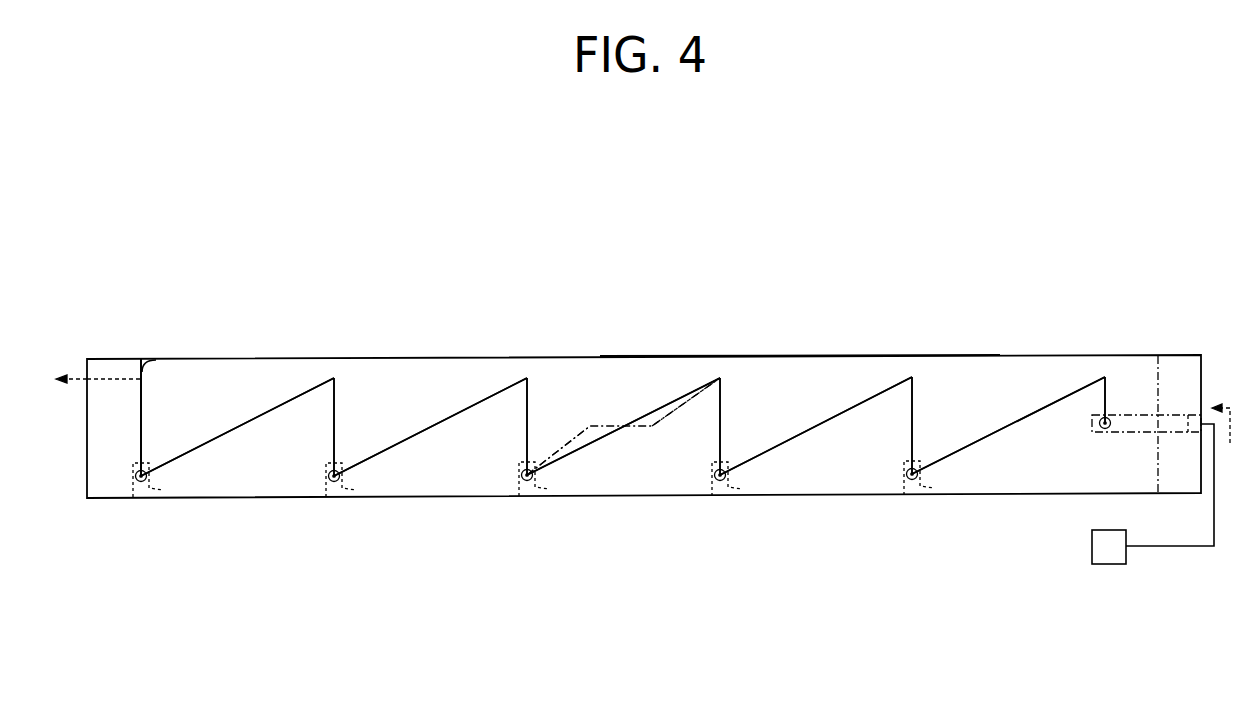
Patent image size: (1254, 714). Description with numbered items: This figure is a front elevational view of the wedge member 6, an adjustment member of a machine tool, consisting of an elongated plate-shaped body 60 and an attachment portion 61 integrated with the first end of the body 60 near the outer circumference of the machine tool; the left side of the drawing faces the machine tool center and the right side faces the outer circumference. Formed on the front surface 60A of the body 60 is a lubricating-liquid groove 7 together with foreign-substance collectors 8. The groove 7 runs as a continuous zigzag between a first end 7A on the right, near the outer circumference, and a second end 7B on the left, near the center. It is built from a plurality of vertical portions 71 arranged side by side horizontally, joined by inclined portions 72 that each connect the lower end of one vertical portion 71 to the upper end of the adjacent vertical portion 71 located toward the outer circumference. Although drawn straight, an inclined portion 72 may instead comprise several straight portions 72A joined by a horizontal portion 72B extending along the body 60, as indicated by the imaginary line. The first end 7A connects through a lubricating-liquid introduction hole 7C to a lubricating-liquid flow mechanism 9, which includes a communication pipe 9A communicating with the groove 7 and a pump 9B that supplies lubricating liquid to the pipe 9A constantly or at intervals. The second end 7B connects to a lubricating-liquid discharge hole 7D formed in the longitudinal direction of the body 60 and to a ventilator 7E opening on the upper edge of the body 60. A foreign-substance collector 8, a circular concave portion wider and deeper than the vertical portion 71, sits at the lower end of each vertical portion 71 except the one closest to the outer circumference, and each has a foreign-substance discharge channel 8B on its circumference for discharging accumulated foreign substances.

The wedge member 6 is at (882, 295).
The body 60 is at (653, 362).
The front surface 60A is at (825, 372).
The attachment portion 61 is at (1158, 378).
The lubricating-liquid groove 7 is at (485, 377).
The first end 7A is at (1108, 418).
The second end 7B is at (144, 380).
The lubricating-liquid introduction hole 7C is at (1133, 433).
The lubricating-liquid discharge hole 7D is at (109, 377).
The ventilator 7E is at (153, 363).
The vertical portions 71 is at (144, 417).
The inclined portions 72 is at (242, 426).
The straight portions 72A is at (582, 434).
The horizontal portion 72B is at (618, 426).
The foreign-substance collector 8 is at (135, 478).
The foreign-substance discharge channel 8B is at (163, 502).
The lubricating-liquid flow mechanism 9 is at (1153, 542).
The communication pipe 9A is at (1178, 549).
The pump 9B is at (1109, 577).